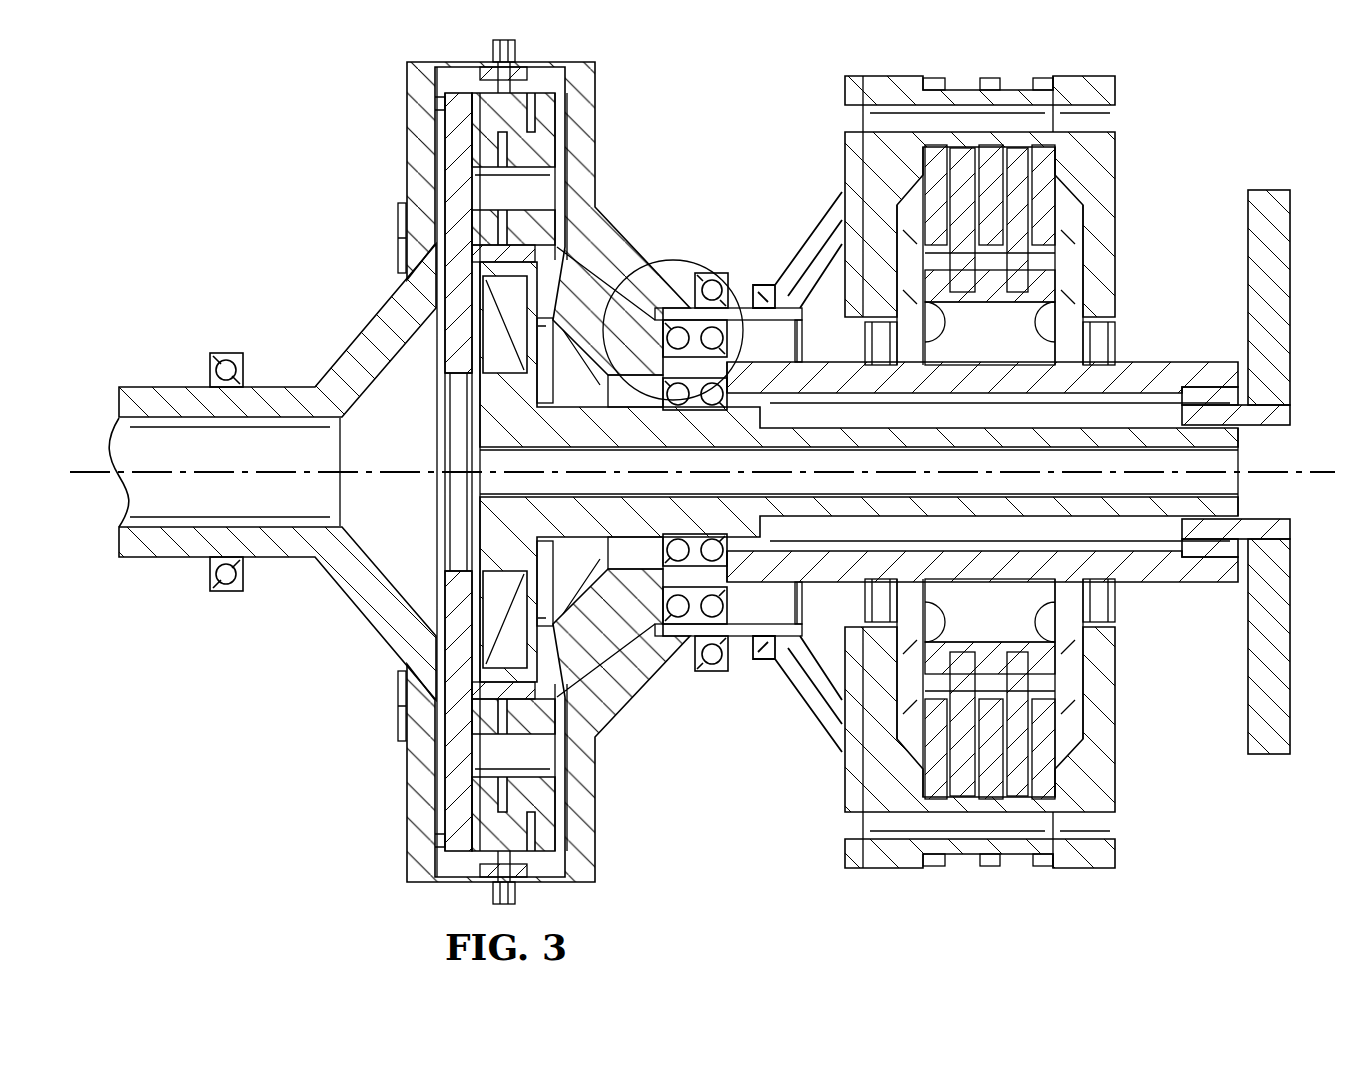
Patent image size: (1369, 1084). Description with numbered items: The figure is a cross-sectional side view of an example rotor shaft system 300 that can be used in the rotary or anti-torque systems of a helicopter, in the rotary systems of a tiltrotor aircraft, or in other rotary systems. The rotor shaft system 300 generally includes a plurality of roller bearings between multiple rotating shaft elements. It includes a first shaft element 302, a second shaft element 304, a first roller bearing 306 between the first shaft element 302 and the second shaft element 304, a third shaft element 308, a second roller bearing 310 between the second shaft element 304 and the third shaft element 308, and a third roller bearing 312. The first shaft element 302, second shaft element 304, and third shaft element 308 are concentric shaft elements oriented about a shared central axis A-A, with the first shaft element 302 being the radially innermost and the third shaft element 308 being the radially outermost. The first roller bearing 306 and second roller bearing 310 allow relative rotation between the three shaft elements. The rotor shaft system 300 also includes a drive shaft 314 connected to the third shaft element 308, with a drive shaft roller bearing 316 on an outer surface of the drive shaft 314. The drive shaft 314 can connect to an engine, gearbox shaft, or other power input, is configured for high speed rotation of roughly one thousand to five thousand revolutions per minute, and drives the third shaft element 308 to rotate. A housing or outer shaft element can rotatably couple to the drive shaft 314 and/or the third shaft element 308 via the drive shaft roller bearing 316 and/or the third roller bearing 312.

The rotor shaft system 300 is at (292, 100).
The first shaft element 302 is at (473, 403).
The second shaft element 304 is at (1138, 362).
The first roller bearing 306 is at (663, 261).
The third shaft element 308 is at (585, 140).
The second roller bearing 310 is at (780, 290).
The third roller bearing 312 is at (710, 273).
The drive shaft 314 is at (150, 395).
The drive shaft roller bearing 316 is at (225, 353).